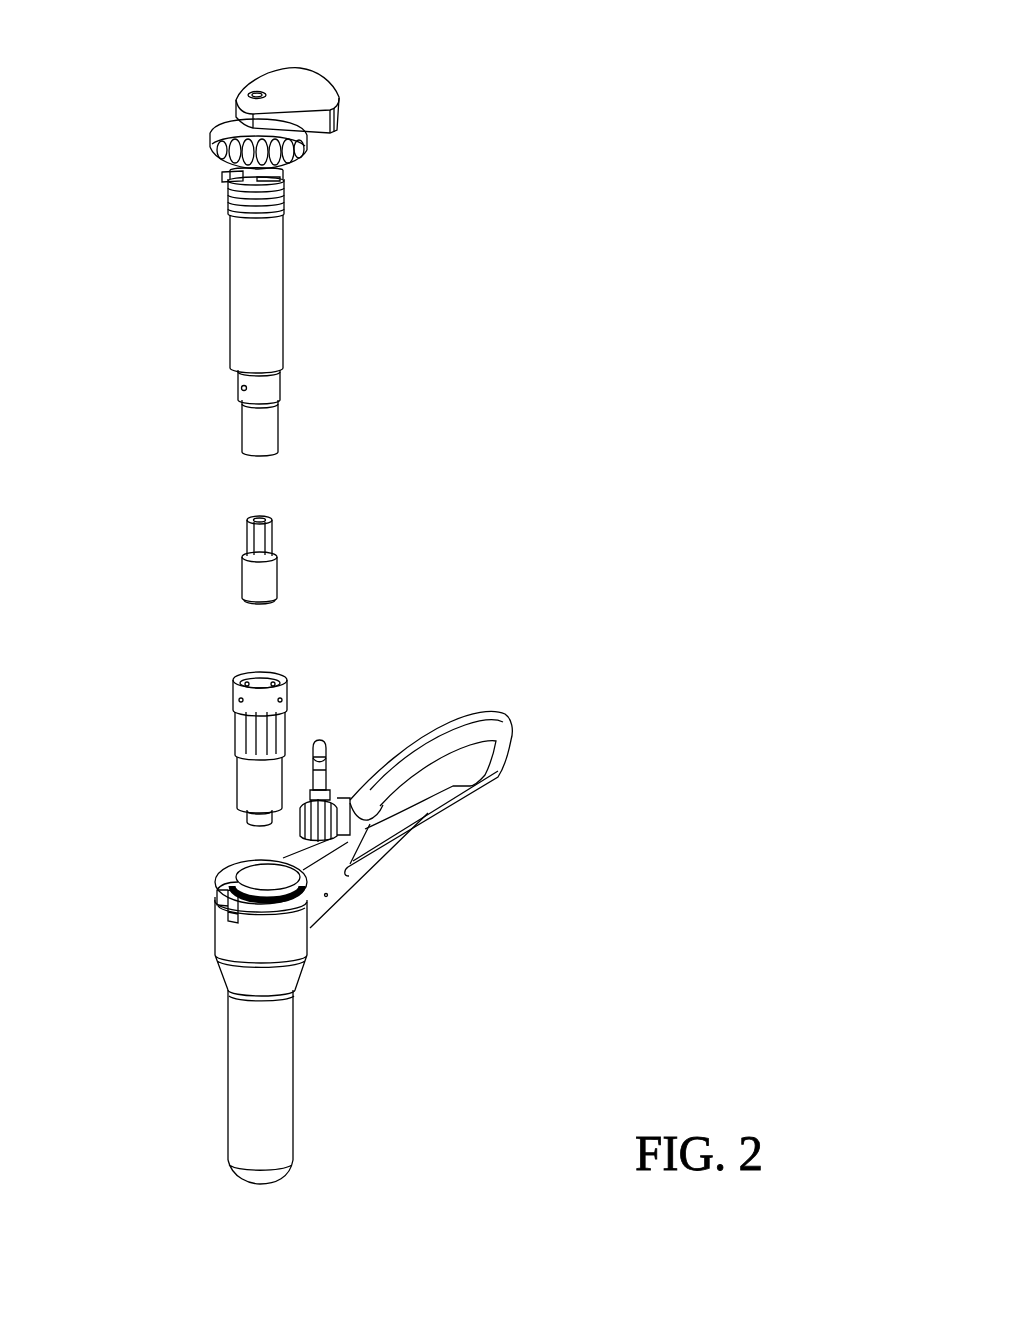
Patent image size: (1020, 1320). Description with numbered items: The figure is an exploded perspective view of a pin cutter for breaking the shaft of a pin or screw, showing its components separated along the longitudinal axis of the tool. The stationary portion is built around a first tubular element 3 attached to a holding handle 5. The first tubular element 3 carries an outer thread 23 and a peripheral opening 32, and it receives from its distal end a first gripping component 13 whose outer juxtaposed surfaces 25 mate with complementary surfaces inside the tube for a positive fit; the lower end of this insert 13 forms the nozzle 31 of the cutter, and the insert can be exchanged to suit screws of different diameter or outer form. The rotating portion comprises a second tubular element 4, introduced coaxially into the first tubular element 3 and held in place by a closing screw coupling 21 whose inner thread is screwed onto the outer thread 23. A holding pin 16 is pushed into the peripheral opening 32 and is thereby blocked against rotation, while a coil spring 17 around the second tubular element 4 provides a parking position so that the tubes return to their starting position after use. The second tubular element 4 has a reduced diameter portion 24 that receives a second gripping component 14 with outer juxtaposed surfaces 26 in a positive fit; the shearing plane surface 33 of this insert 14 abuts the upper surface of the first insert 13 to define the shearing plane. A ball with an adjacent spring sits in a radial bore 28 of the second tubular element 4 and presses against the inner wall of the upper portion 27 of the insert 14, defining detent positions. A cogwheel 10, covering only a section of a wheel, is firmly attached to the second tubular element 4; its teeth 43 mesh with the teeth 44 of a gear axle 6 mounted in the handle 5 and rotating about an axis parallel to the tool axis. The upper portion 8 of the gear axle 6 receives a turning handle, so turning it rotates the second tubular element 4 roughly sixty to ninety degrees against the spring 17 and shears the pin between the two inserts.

The first tubular element 3 is at (233, 1022).
The second tubular element 4 is at (245, 306).
The holding handle 5 is at (486, 770).
The gear axle 6 is at (322, 796).
The upper portion 8 is at (322, 757).
The cogwheel 10 is at (278, 76).
The first gripping component 13 is at (182, 749).
The second gripping component 14 is at (236, 564).
The holding pin 16 is at (226, 176).
The spring 17 is at (288, 198).
The closing screw coupling 21 is at (214, 130).
The outer thread 23 is at (222, 882).
The reduced diameter portion 24 is at (254, 425).
The outer juxtaposed surfaces 25 is at (243, 730).
The outer juxtaposed surfaces 26 is at (270, 538).
The upper portion 27 is at (236, 702).
The radial bore 28 is at (240, 389).
The nozzle 31 is at (252, 818).
The peripheral opening 32 is at (230, 920).
The shearing plane surface 33 is at (276, 600).
The teeth 43 is at (338, 124).
The teeth 44 is at (330, 826).